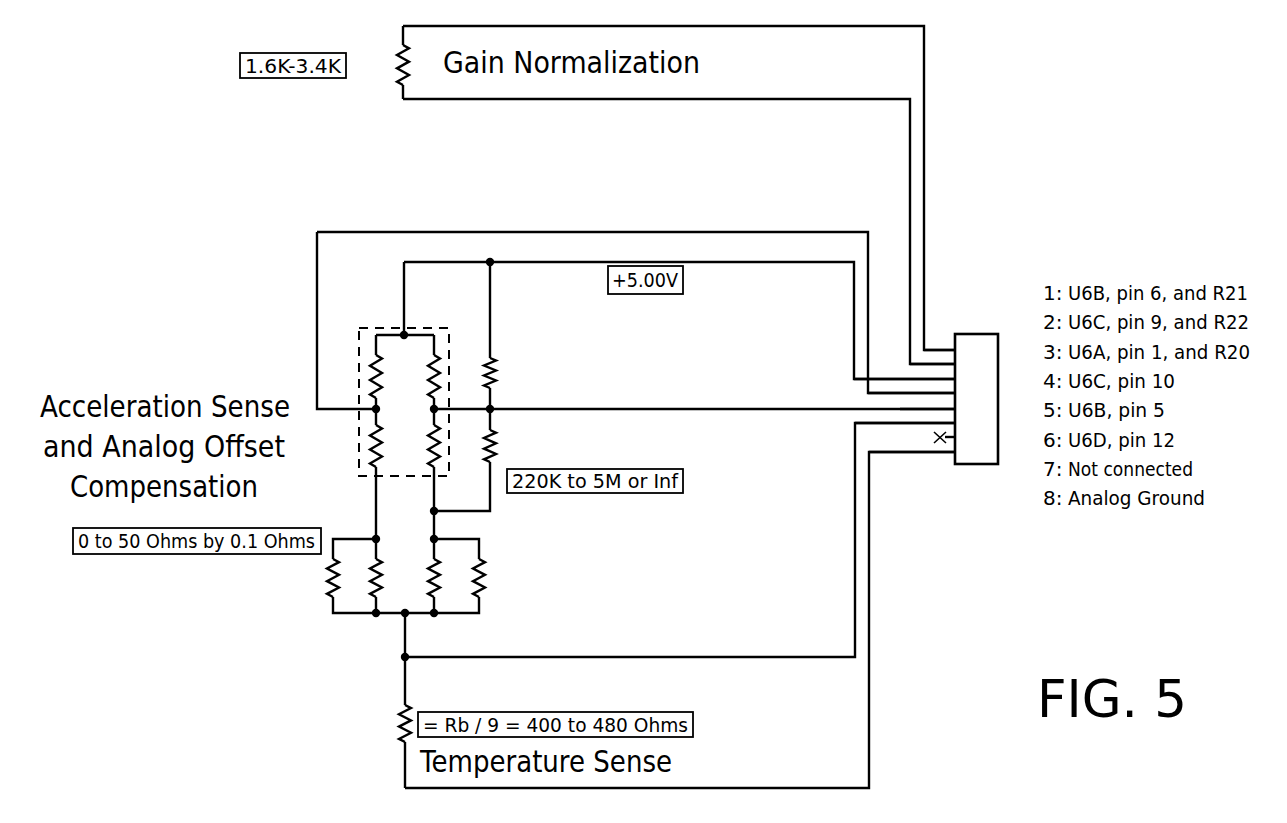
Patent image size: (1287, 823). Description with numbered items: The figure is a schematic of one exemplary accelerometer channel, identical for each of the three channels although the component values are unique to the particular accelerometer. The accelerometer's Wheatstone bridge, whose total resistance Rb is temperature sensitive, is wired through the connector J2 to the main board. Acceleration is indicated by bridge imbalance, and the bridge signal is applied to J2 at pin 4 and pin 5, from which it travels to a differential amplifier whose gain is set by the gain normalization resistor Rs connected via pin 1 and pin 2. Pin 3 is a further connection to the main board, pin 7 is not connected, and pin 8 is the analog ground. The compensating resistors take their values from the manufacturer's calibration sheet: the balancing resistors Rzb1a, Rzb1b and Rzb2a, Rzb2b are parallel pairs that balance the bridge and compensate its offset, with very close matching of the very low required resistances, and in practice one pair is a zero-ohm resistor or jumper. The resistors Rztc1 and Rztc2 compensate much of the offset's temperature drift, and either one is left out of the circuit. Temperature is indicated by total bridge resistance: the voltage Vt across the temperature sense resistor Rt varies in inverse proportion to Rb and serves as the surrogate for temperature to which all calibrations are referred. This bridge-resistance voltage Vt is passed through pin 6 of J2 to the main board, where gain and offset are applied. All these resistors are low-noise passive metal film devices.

The J2 pin 1 is at (667, 418).
The J2 pin 2 is at (706, 425).
The J2 pin 3 is at (681, 348).
The J2 pin 4 is at (658, 395).
The J2 pin 5 is at (713, 403).
The J2 pin 6 is at (913, 423).
The J2 pin 7 is at (953, 437).
The J2 pin 8 is at (920, 452).
The connector J2 is at (977, 398).
The gain normalization resistor Rs is at (385, 62).
The total bridge resistance Rb is at (404, 433).
The temperature compensating resistor Rztc1 is at (533, 335).
The temperature compensating resistor Rztc2 is at (508, 460).
The bridge balancing resistor Rzb1a is at (321, 576).
The bridge balancing resistor Rzb1b is at (357, 601).
The bridge balancing resistor Rzb2a is at (467, 591).
The bridge balancing resistor Rzb2b is at (490, 576).
The temperature sense resistor Rt is at (385, 745).
The bridge-resistance voltage Vt is at (680, 564).